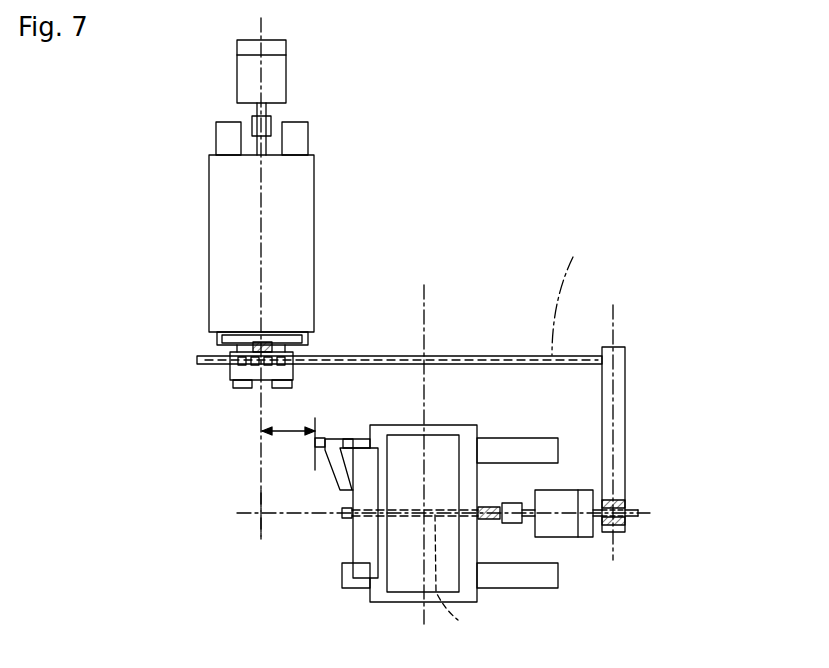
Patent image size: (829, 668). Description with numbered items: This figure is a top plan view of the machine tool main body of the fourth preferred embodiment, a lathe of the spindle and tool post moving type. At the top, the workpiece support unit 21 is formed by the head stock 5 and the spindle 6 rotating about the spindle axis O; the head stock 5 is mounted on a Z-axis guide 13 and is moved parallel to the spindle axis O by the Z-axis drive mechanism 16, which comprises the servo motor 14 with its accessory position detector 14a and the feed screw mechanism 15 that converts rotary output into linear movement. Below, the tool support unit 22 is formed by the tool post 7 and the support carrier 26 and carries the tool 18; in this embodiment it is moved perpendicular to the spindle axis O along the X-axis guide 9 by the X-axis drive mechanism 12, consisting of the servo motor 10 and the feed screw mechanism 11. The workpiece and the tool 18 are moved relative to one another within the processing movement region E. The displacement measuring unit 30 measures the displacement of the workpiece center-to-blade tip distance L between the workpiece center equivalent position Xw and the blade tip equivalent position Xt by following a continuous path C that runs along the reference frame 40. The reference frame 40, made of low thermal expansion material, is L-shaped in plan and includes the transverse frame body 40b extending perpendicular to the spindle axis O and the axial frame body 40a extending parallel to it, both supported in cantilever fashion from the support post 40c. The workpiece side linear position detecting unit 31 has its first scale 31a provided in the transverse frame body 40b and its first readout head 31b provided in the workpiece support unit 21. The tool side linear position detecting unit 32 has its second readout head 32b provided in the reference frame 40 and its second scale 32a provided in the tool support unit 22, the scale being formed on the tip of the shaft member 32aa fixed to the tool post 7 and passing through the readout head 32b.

The position detector 14a is at (282, 46).
The servo motor 14 is at (237, 68).
The feed screw mechanism 15 is at (255, 142).
The Z-axis drive mechanism 16 is at (217, 94).
The Z-axis guide 13 is at (296, 126).
The spindle axis O is at (261, 185).
The workpiece support unit 21 is at (188, 253).
The head stock 5 is at (223, 237).
The spindle 6 is at (280, 343).
The workpiece side linear position detecting unit 31 is at (155, 370).
The first readout head 31b is at (237, 345).
The first scale 31a is at (235, 378).
The displacement measuring unit 30 is at (399, 276).
The transverse frame body 40b is at (487, 355).
The path C is at (571, 291).
The reference frame 40 is at (671, 432).
The support post 40c is at (612, 372).
The axial frame body 40a is at (625, 457).
The workpiece center-to-blade tip distance L is at (288, 434).
The tool 18 is at (318, 445).
The tool support unit 22 is at (360, 614).
The tool post 7 is at (357, 540).
The support carrier 26 is at (400, 585).
The X-axis guide 9 is at (515, 442).
The processing movement region E is at (246, 545).
The blade tip equivalent position Xt is at (345, 520).
The workpiece center equivalent position Xw is at (265, 400).
The tool side linear position detecting unit 32 is at (545, 570).
The second scale 32a is at (626, 514).
The second readout head 32b is at (620, 526).
The shaft member 32aa is at (481, 578).
The X-axis drive mechanism 12 is at (580, 566).
The feed screw mechanism 11 is at (493, 522).
The servo motor 10 is at (565, 530).